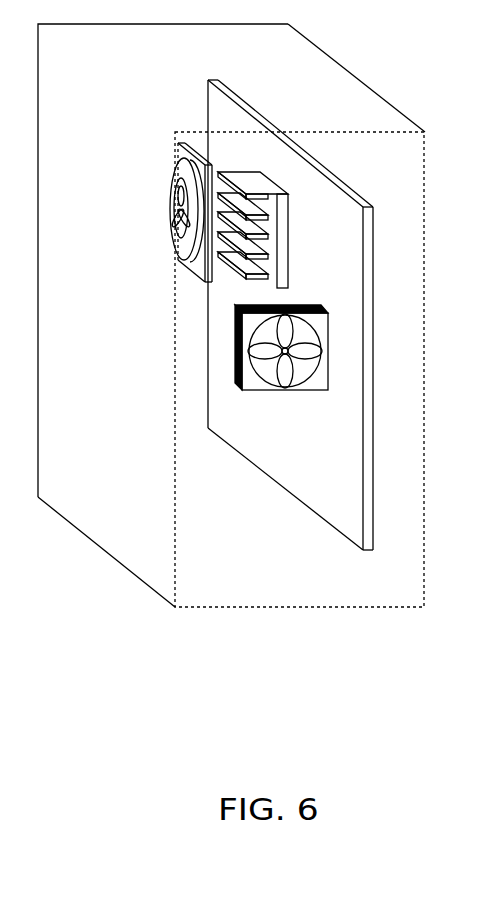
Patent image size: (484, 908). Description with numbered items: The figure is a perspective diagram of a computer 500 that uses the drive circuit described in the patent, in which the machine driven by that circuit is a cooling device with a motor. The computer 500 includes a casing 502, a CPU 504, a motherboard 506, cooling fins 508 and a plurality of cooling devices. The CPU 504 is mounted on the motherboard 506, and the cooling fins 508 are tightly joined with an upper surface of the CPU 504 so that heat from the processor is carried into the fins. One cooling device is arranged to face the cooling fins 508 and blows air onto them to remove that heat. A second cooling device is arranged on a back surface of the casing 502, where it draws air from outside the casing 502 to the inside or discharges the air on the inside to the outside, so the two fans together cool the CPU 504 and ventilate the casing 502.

The computer 500 is at (257, 687).
The casing 502 is at (343, 68).
The CPU 504 is at (233, 274).
The motherboard 506 is at (349, 177).
The cooling fins 508 is at (240, 273).